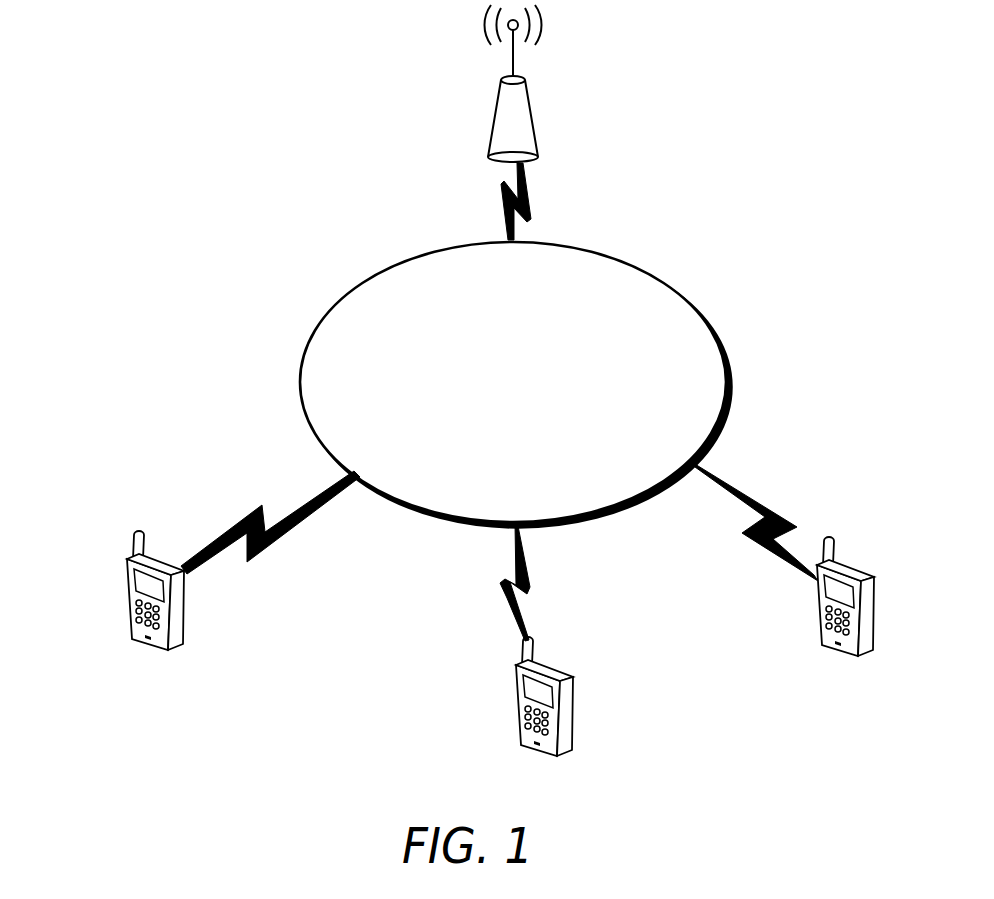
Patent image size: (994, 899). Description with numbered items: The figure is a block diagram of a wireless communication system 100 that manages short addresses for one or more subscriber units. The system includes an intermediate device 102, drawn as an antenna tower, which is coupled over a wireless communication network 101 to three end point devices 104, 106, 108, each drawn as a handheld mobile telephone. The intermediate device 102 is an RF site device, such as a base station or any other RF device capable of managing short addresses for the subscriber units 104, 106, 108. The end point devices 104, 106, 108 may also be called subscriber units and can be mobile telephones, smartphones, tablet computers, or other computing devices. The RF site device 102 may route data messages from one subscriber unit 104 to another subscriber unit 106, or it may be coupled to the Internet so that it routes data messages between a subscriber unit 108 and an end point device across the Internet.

The wireless communication system 100 is at (176, 130).
The wireless communication network 101 is at (328, 312).
The intermediate device 102 is at (495, 112).
The end point device 104 is at (127, 597).
The end point device 106 is at (515, 705).
The end point device 108 is at (817, 602).